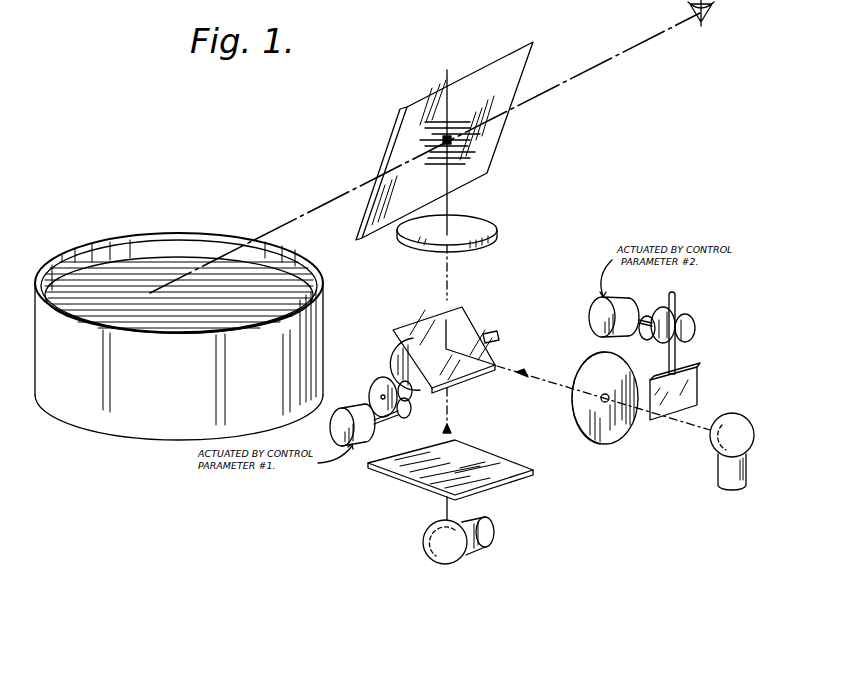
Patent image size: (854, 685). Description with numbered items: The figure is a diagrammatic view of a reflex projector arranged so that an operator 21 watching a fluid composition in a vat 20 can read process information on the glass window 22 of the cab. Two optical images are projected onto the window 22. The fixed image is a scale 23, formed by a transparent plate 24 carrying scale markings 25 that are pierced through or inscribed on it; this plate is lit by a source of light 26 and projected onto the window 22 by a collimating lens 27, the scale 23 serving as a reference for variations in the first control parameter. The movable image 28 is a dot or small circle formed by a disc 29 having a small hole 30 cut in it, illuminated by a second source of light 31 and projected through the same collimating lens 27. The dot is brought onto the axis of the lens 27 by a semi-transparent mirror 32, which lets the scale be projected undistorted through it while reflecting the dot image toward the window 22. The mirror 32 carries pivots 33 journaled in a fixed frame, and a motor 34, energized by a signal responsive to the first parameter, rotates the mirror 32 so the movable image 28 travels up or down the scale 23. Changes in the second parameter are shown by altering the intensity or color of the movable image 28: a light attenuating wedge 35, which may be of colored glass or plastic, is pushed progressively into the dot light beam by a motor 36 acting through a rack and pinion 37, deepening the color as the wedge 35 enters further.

The vat 20 is at (133, 232).
The operator 21 is at (690, 24).
The window 22 is at (480, 187).
The scale 23 is at (492, 145).
The transparent plate 24 is at (518, 481).
The scale markings 25 is at (462, 460).
The source of light 26 is at (462, 552).
The collimating lens 27 is at (497, 238).
The movable image 28 is at (448, 241).
The disc 29 is at (619, 432).
The small hole 30 is at (600, 398).
The second source of light 31 is at (712, 456).
The semi-transparent mirror 32 is at (465, 322).
The pivots 33 is at (405, 363).
The motor 34 is at (352, 410).
The light attenuating wedge 35 is at (700, 383).
The motor 36 is at (592, 310).
The rack and pinion 37 is at (685, 315).